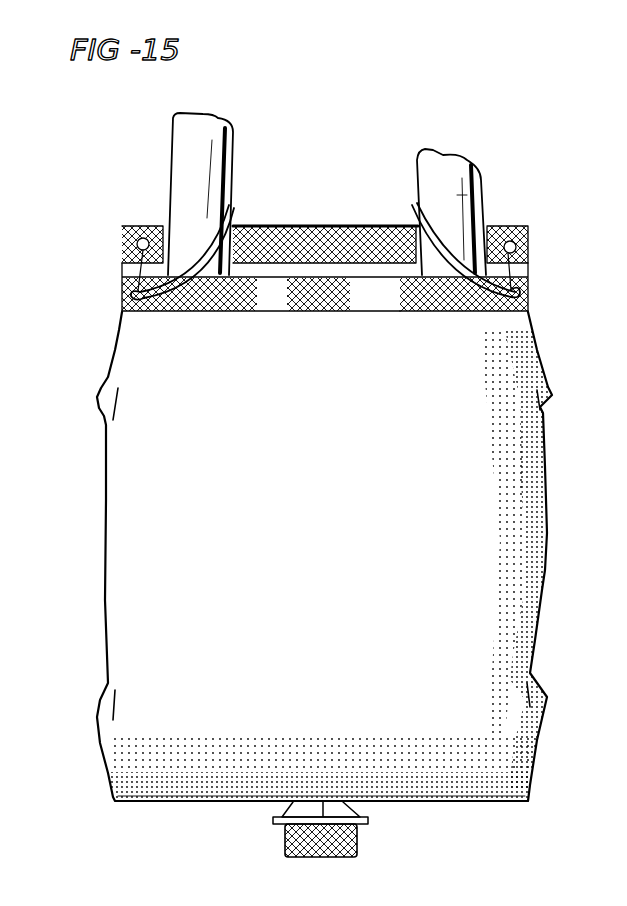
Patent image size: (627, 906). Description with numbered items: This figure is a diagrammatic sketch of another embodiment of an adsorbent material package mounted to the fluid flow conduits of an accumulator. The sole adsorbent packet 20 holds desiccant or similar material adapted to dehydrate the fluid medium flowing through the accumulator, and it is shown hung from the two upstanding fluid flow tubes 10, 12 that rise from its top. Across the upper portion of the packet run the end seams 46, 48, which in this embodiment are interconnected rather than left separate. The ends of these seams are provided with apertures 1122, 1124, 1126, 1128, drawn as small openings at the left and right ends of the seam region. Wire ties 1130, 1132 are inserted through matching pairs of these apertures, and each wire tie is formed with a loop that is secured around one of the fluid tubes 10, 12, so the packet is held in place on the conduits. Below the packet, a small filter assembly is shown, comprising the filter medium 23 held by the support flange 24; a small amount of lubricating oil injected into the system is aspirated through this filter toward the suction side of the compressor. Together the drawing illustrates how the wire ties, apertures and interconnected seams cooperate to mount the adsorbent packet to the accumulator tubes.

The fluid flow tube 10 is at (219, 154).
The fluid flow tube 12 is at (478, 178).
The adsorbent packet 20 is at (206, 534).
The filter medium 23 is at (357, 848).
The support flange 24 is at (367, 821).
The end seam 46 is at (330, 227).
The end seam 48 is at (530, 302).
The aperture 1122 is at (121, 226).
The aperture 1124 is at (123, 297).
The aperture 1126 is at (545, 209).
The aperture 1128 is at (529, 279).
The wire tie 1130 is at (250, 226).
The wire tie 1132 is at (413, 222).